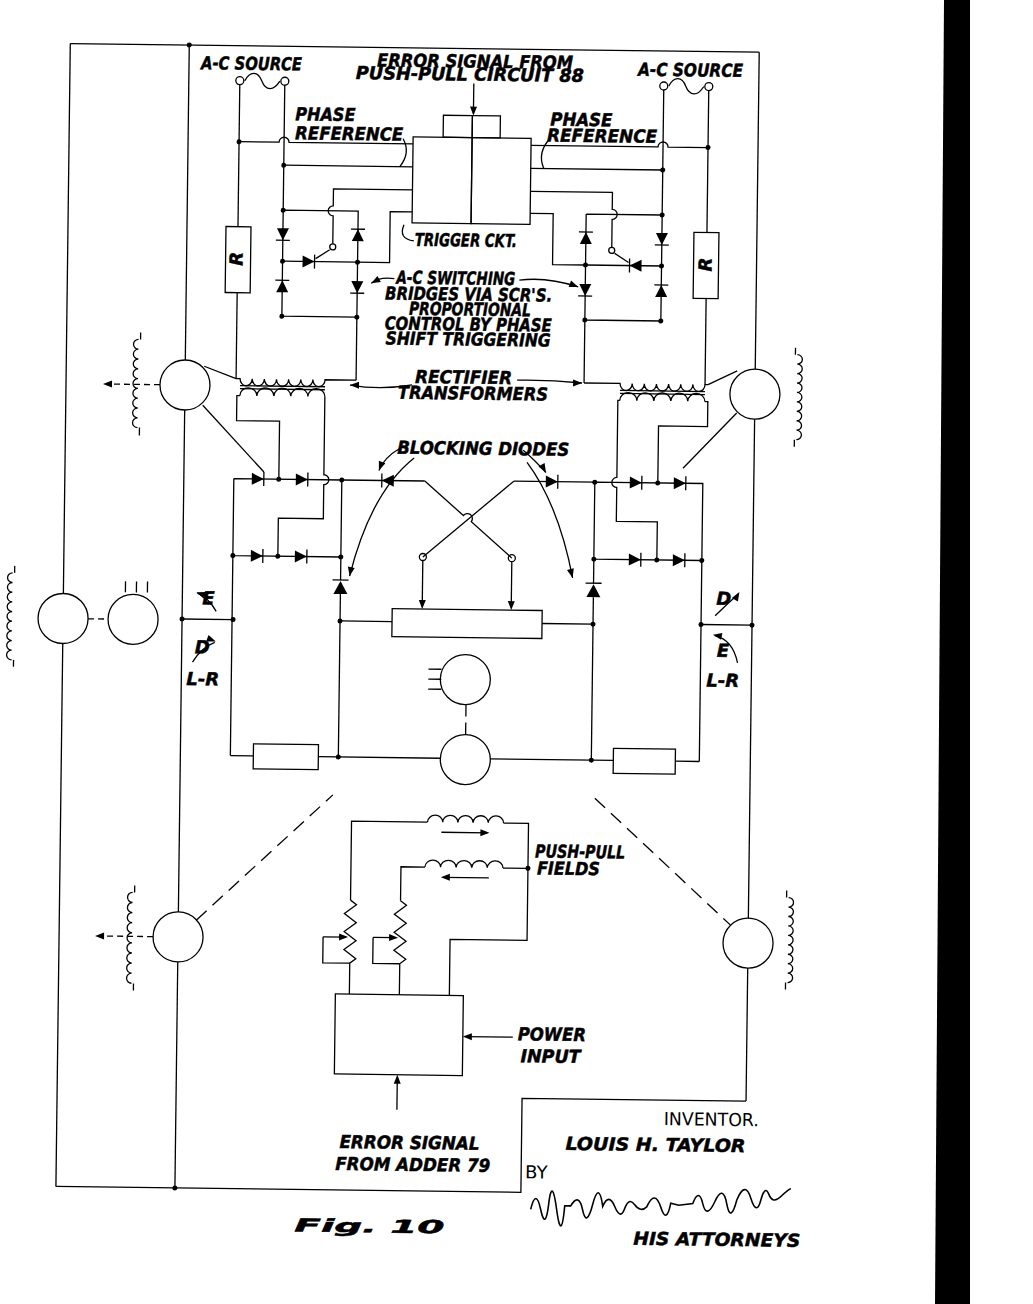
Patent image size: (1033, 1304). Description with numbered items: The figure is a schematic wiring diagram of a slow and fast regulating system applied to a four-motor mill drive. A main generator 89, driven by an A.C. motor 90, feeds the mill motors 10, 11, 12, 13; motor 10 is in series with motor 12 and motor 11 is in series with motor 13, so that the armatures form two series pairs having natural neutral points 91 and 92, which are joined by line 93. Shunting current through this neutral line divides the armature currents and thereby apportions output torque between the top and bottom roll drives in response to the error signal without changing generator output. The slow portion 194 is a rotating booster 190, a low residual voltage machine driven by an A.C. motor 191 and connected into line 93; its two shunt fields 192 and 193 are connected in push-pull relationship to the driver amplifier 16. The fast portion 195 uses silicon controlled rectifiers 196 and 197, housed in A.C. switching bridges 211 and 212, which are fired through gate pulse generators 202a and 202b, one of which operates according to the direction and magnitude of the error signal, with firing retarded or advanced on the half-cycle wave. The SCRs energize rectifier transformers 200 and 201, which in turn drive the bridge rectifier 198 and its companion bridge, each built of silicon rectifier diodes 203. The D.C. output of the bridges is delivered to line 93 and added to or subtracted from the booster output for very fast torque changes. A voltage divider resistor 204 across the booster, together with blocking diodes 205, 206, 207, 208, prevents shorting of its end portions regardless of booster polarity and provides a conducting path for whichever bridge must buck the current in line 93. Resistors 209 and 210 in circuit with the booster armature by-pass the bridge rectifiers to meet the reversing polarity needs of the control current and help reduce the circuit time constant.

The mill motor 10 is at (199, 957).
The mill motor 11 is at (742, 348).
The mill motor 12 is at (222, 345).
The mill motor 13 is at (731, 938).
The driver amplifier 16 is at (470, 1068).
The main generator 89 is at (114, 592).
The A.C. motor 90 is at (150, 640).
The neutral point 91 is at (182, 617).
The neutral point 92 is at (757, 618).
The line 93 is at (237, 620).
The rotating booster 190 is at (450, 742).
The A.C. motor 191 is at (494, 678).
The shunt field 192 is at (478, 797).
The shunt field 193 is at (476, 845).
The slow portion 194 is at (341, 886).
The fast portion 195 is at (475, 492).
The silicon controlled rectifier 196 is at (329, 242).
The silicon controlled rectifier 197 is at (610, 245).
The bridge rectifier 198 is at (296, 515).
The rectifier transformer 200 is at (328, 397).
The rectifier transformer 201 is at (616, 398).
The gate pulse generator 202a is at (427, 134).
The gate pulse generator 202b is at (502, 134).
The silicon rectifier diodes 203 is at (253, 478).
The voltage divider resistor 204 is at (510, 634).
The blocking diode 205 is at (340, 590).
The blocking diode 206 is at (385, 474).
The blocking diode 207 is at (600, 592).
The blocking diode 208 is at (558, 475).
The resistor 209 is at (300, 743).
The resistor 210 is at (660, 743).
The A.C. switching bridge 211 is at (325, 299).
The A.C. switching bridge 212 is at (634, 304).